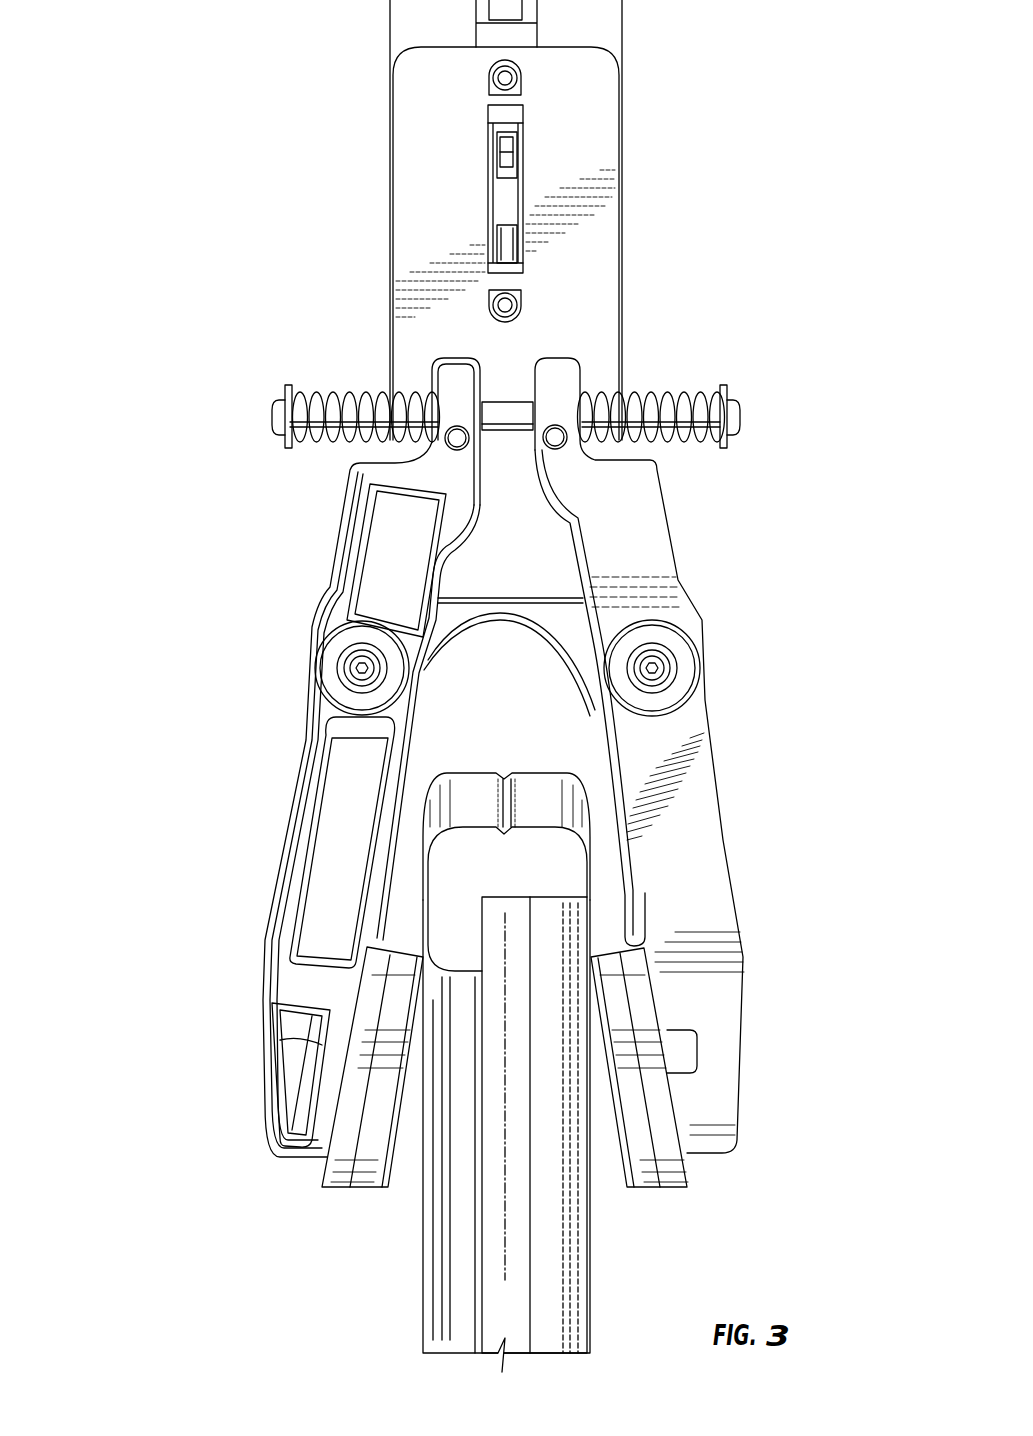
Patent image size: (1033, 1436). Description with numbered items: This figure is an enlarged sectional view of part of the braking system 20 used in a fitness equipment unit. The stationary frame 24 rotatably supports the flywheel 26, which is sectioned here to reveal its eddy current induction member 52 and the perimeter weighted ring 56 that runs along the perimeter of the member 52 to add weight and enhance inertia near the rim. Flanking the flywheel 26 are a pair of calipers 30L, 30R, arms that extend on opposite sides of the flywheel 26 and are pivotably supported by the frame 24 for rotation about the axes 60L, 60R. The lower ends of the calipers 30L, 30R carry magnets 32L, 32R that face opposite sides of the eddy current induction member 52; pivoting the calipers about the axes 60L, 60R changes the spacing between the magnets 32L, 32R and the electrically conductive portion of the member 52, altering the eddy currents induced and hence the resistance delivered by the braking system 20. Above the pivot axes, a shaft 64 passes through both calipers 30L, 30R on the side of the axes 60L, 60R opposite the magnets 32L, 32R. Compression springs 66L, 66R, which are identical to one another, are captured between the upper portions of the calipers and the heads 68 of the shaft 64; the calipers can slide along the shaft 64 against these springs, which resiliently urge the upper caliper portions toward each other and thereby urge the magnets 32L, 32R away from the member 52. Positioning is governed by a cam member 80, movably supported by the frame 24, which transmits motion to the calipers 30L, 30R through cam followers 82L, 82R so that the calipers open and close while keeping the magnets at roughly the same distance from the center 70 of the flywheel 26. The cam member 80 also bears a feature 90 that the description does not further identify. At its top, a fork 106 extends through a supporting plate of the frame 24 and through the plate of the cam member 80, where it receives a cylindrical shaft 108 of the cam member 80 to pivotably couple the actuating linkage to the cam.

The braking system 20 is at (170, 322).
The frame 24 is at (553, 610).
The flywheel 26 is at (588, 1262).
The caliper 30R is at (290, 810).
The caliper 30L is at (718, 786).
The magnet 32R is at (363, 1188).
The magnet 32L is at (660, 1188).
The eddy current induction member 52 is at (523, 1316).
The perimeter weighted ring 56 is at (478, 773).
The axis 60R is at (360, 668).
The axis 60L is at (658, 668).
The shaft 64 is at (512, 392).
The compression spring 66R is at (345, 400).
The compression spring 66L is at (680, 400).
The head 68 is at (735, 408).
The center 70 is at (507, 1193).
The cam member 80 is at (388, 285).
The cam follower 82R is at (452, 442).
The cam follower 82L is at (548, 447).
The slot 90 is at (489, 239).
The fork 106 is at (513, 160).
The cylindrical shaft 108 is at (517, 180).